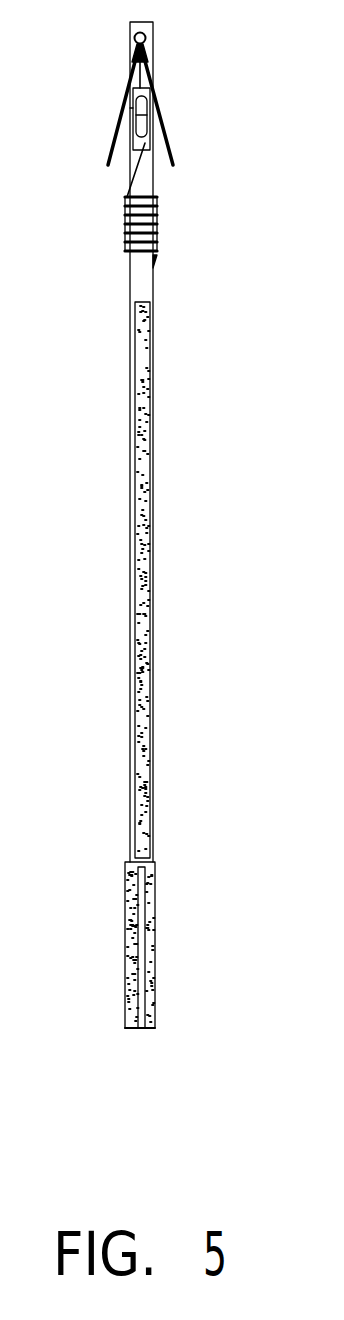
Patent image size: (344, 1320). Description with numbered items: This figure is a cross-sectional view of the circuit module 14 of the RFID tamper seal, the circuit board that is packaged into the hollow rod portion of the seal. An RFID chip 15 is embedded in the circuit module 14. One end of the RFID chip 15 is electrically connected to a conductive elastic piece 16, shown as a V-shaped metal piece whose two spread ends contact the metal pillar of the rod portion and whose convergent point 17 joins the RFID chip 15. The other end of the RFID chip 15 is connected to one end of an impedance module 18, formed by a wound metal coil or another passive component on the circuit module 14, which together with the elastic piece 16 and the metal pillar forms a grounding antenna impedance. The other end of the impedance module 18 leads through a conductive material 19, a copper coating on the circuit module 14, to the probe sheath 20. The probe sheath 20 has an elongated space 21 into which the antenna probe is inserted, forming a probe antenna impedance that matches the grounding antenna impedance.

The circuit module 14 is at (143, 280).
The RFID chip 15 is at (140, 116).
The conductive elastic piece 16 is at (165, 125).
The convergent point 17 is at (146, 37).
The impedance module 18 is at (158, 235).
The conductive material 19 is at (140, 362).
The probe sheath 20 is at (152, 898).
The elongated space 21 is at (140, 1028).